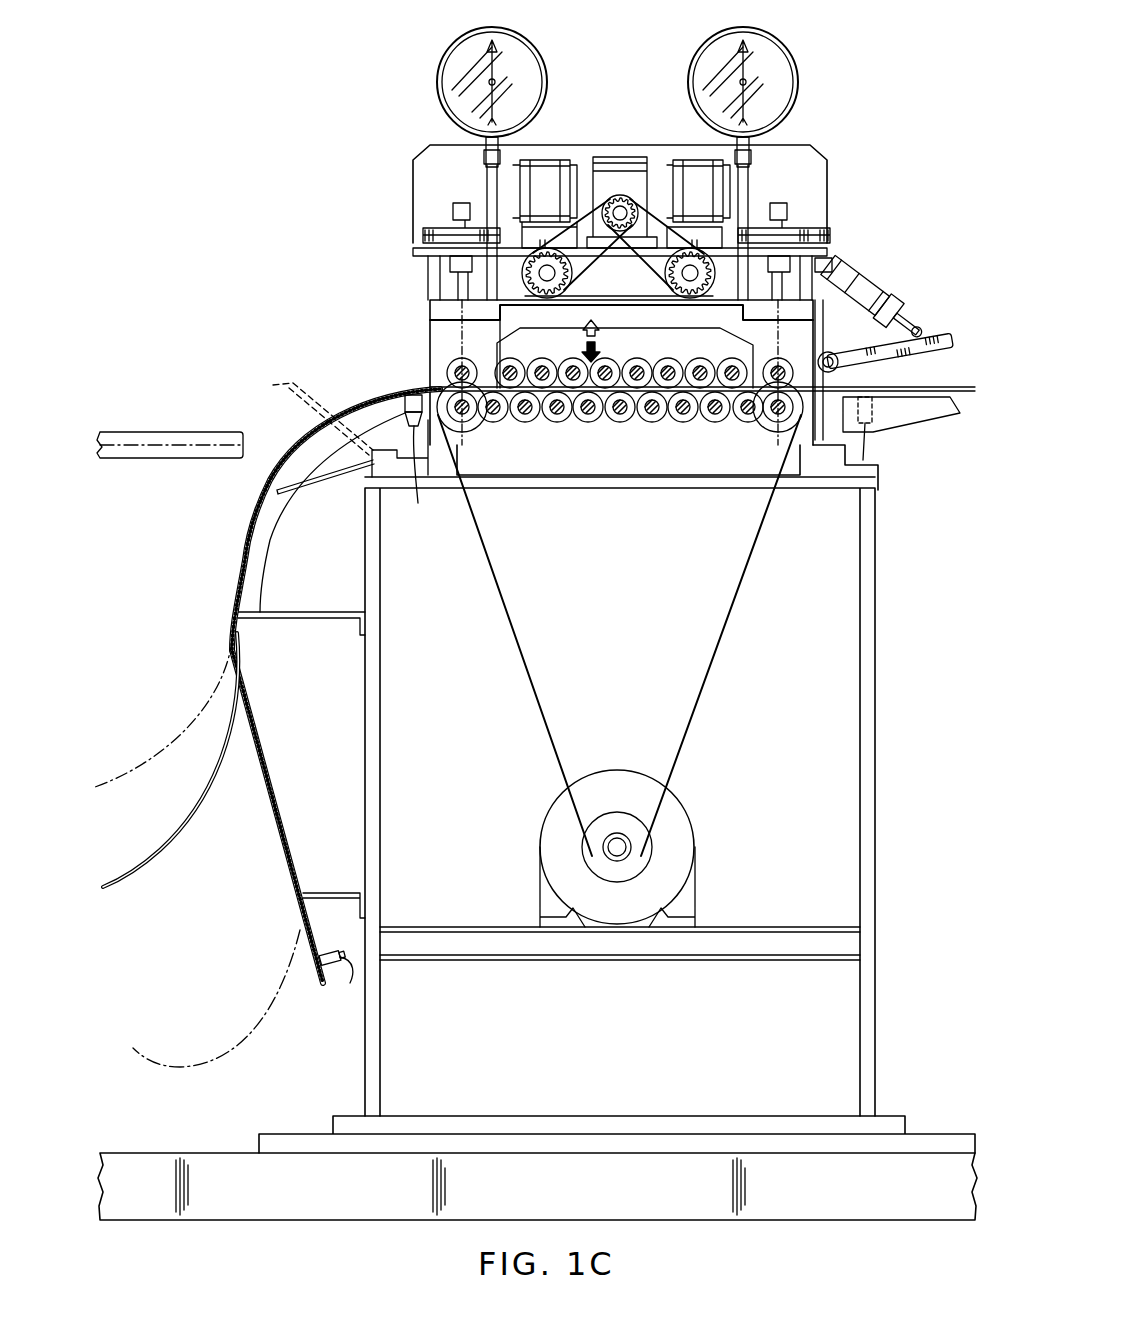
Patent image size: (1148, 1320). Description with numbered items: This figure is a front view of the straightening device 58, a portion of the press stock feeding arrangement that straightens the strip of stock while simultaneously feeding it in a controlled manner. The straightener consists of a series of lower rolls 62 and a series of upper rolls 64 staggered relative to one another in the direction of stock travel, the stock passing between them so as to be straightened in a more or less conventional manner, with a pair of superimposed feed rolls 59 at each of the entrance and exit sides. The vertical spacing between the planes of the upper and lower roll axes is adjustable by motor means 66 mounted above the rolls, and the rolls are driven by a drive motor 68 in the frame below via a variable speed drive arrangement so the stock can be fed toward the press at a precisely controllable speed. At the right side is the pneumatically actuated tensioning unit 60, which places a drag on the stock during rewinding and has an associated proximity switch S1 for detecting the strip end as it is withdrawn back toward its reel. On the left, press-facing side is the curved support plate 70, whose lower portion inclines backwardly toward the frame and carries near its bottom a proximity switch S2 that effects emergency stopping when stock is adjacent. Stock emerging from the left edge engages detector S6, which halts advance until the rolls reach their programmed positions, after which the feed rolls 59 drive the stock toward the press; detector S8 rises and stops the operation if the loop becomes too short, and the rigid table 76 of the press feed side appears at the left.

The motor means 66 is at (688, 170).
The straightening device 58 is at (884, 277).
The pneumatically actuated tensioning unit 60 is at (928, 340).
The upper rolls 64 is at (697, 362).
The lower rolls 62 is at (623, 421).
The feed rolls 59 is at (470, 412).
The drive motor 68 is at (557, 812).
The curved support plate 70 is at (240, 555).
The table 76 is at (165, 440).
The proximity switch S1 is at (873, 411).
The proximity switch S2 is at (333, 968).
The detector S6 is at (413, 398).
The detector S8 is at (373, 467).